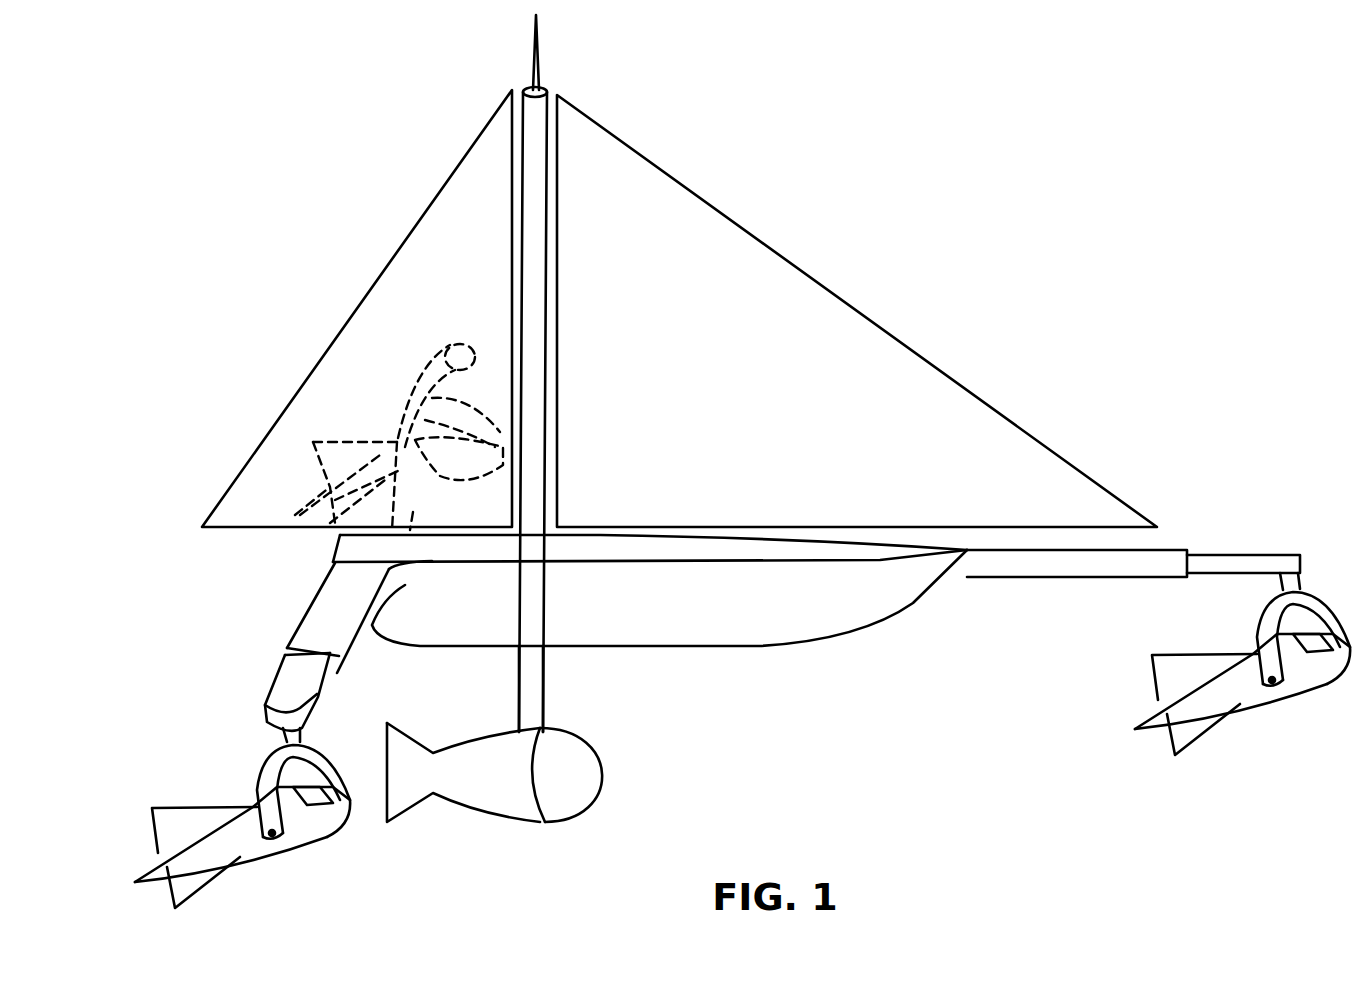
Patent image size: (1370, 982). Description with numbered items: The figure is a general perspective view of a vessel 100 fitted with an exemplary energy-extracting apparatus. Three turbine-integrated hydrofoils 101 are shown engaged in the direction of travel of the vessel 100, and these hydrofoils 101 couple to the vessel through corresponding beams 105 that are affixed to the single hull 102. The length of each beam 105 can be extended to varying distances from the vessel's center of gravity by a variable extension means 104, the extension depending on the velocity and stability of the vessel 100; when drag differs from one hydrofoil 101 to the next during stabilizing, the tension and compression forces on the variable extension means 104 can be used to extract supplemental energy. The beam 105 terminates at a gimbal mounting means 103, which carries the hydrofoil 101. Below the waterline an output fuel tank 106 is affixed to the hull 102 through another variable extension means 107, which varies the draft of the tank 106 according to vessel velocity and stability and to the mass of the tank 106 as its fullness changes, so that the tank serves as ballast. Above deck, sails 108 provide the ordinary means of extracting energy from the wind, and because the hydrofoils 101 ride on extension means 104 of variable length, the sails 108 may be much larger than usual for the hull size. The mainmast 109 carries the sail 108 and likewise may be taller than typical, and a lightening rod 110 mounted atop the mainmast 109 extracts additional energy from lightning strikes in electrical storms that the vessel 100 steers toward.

The vessel 100 is at (945, 131).
The turbine-integrated hydrofoil 101 is at (320, 842).
The hull 102 is at (574, 608).
The gimbal mounting means 103 is at (263, 727).
The variable extension means 104 is at (285, 663).
The beam 105 is at (313, 633).
The output fuel tank 106 is at (588, 802).
The variable extension means 107 is at (543, 687).
The sail 108 is at (430, 279).
The mainmast 109 is at (546, 185).
The lightening rod 110 is at (540, 50).